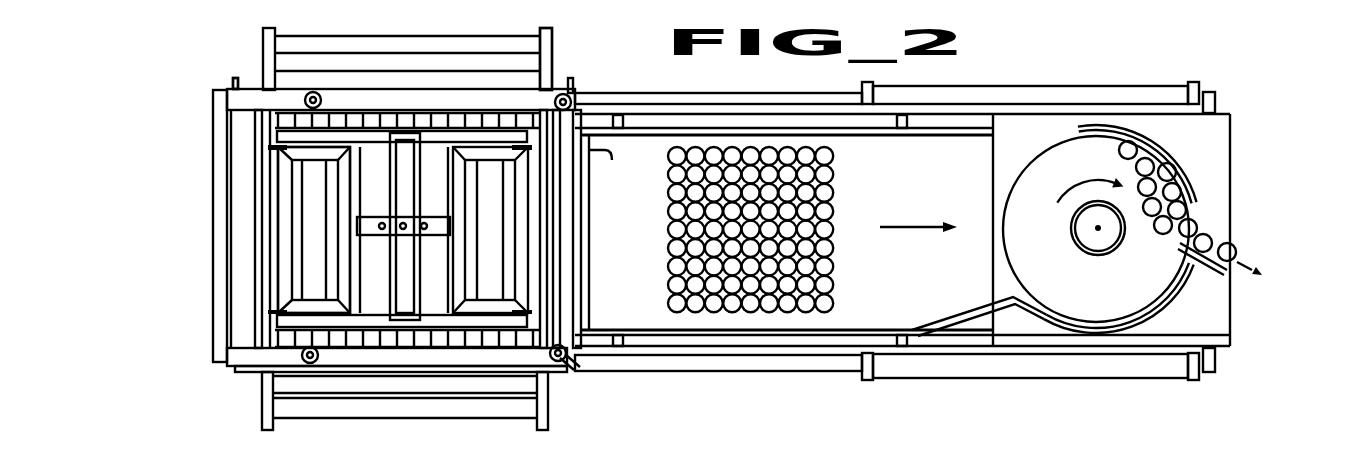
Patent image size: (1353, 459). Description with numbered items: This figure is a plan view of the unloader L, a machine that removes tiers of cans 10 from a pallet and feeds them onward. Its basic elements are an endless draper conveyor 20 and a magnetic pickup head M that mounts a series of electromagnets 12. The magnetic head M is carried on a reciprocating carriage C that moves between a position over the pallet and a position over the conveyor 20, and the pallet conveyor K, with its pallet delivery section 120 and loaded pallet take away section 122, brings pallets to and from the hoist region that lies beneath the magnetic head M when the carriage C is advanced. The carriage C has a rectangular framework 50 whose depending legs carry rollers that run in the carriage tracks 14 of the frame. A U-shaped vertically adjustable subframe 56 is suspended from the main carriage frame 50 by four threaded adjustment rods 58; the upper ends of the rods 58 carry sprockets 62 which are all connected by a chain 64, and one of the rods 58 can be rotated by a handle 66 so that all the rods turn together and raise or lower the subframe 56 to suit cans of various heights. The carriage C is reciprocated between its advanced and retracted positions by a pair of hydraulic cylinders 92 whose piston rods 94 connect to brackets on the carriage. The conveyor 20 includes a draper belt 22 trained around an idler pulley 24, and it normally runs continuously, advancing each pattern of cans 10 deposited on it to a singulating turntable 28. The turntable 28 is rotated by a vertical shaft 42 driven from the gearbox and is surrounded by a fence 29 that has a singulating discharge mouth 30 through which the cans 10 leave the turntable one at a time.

The cans 10 is at (832, 175).
The electromagnets 12 is at (297, 240).
The carriage tracks 14 is at (659, 110).
The endless draper conveyor 20 is at (935, 193).
The draper belt 22 is at (995, 307).
The idler pulley 24 is at (610, 153).
The singulating turntable 28 is at (1107, 140).
The fence 29 is at (1143, 317).
The singulating discharge mouth 30 is at (1202, 233).
The vertical shaft 42 is at (1098, 229).
The rectangular framework 50 is at (200, 118).
The vertically adjustable subframe 56 is at (280, 300).
The threaded adjustment rods 58 is at (302, 97).
The sprockets 62 is at (323, 100).
The chain 64 is at (388, 92).
The handle 66 is at (568, 370).
The hydraulic cylinders 92 is at (1042, 92).
The piston rods 94 is at (712, 93).
The pallet delivery section 120 is at (263, 418).
The loaded pallet take away section 122 is at (550, 42).
The reciprocating carriage C is at (222, 83).
The magnetic pickup head M is at (288, 184).
The unloader L is at (145, 248).
The pallet conveyor K is at (305, 418).